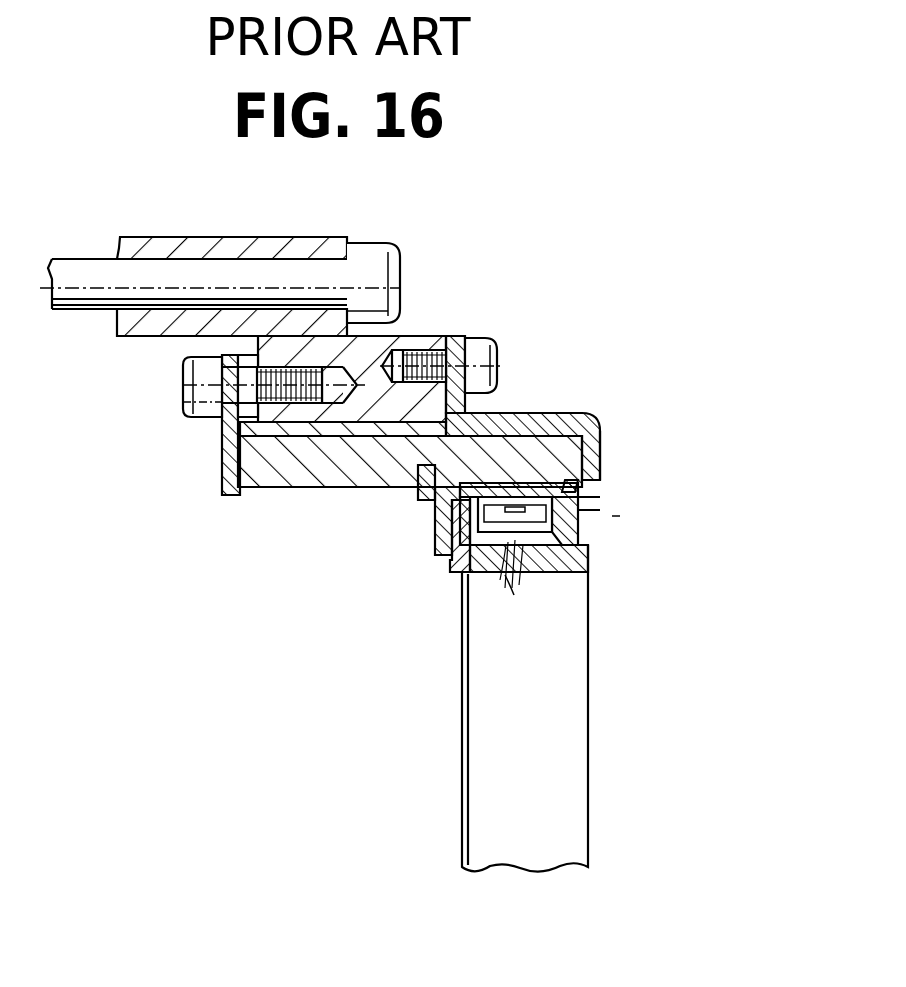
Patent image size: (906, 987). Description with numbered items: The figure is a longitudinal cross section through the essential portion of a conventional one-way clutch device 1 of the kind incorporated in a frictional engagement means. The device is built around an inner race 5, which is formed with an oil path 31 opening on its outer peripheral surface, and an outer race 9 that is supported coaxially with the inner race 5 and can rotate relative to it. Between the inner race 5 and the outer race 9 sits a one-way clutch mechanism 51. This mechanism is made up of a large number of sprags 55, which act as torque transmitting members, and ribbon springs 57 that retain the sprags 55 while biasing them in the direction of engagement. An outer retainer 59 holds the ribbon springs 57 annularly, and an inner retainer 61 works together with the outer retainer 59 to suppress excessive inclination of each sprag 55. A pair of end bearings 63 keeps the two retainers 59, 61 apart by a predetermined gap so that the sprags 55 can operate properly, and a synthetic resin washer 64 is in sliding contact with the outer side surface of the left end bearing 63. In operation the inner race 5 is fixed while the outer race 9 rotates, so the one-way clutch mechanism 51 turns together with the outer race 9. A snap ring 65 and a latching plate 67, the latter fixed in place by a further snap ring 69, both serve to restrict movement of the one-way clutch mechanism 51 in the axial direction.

The one-way clutch device 1 is at (692, 485).
The inner race 5 is at (590, 574).
The outer race 9 is at (510, 447).
The oil path 31 is at (515, 596).
The one-way clutch mechanism 51 is at (618, 516).
The sprags 55 is at (590, 550).
The ribbon springs 57 is at (570, 508).
The outer retainer 59 is at (516, 490).
The inner retainer 61 is at (520, 560).
The end bearings 63 is at (463, 530).
The synthetic resin washer 64 is at (458, 500).
The snap ring 65 is at (568, 494).
The latching plate 67 is at (442, 500).
The snap ring 69 is at (420, 489).